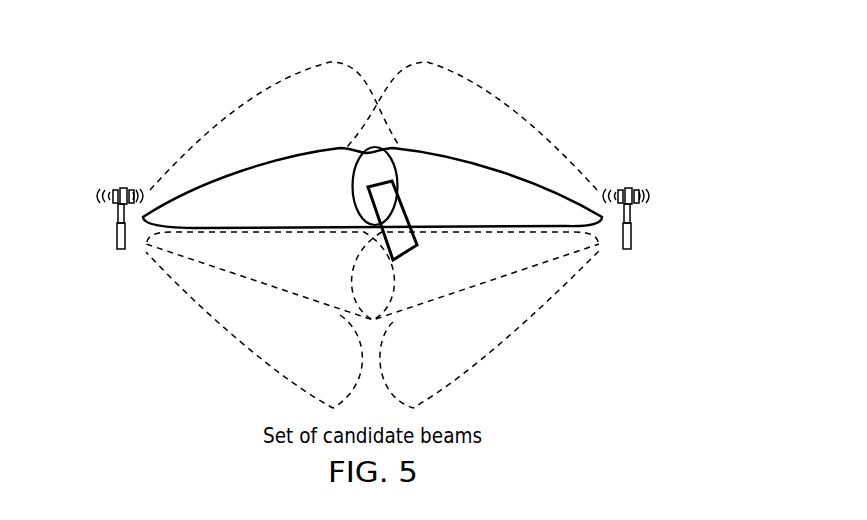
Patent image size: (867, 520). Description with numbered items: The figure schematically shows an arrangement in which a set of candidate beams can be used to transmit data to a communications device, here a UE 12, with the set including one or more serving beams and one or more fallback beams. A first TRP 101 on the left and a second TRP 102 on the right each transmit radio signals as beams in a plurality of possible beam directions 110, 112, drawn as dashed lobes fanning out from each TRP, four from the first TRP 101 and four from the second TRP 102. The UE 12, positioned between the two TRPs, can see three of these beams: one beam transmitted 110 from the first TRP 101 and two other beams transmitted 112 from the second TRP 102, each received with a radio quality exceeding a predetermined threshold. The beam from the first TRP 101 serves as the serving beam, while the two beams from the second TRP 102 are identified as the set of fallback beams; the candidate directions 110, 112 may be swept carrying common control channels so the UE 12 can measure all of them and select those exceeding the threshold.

The UE 12 is at (392, 208).
The first TRP 101 is at (115, 207).
The second TRP 102 is at (631, 238).
The plurality of possible beam directions 110 is at (224, 121).
The plurality of possible beam directions 112 is at (547, 140).